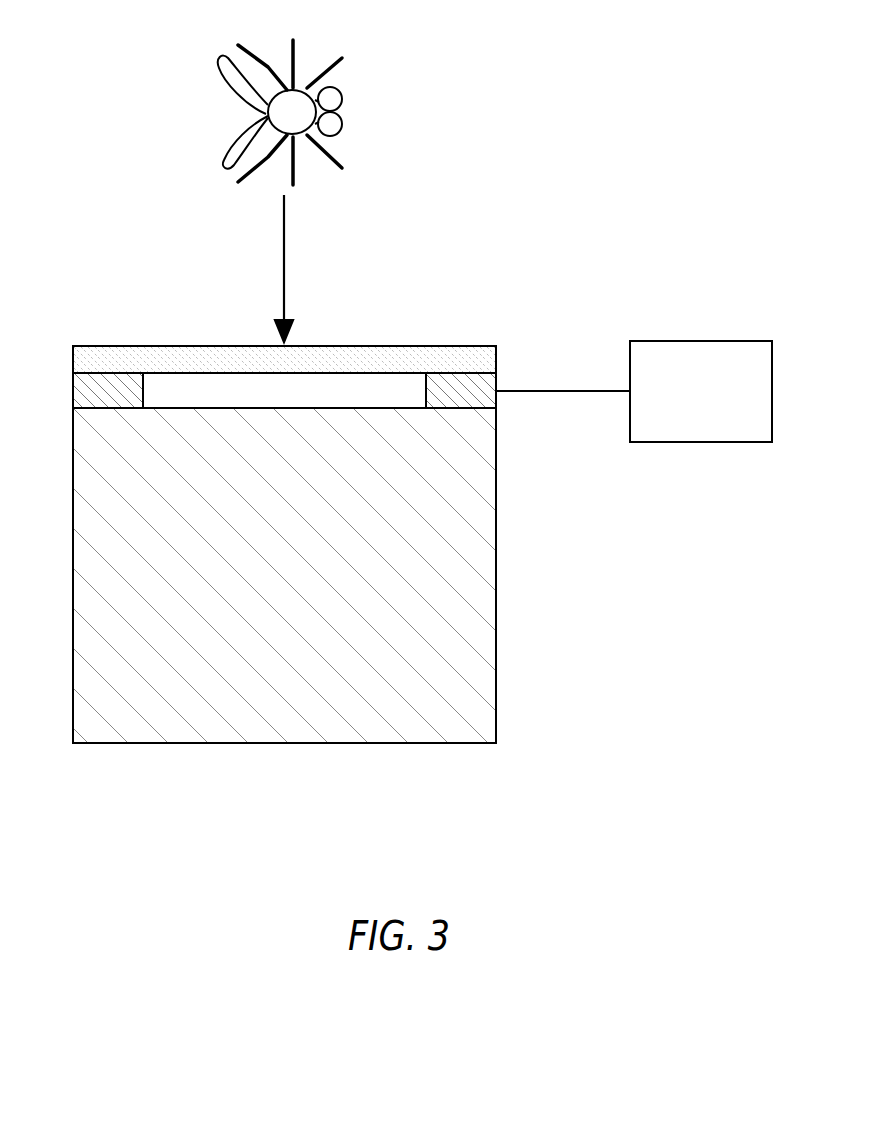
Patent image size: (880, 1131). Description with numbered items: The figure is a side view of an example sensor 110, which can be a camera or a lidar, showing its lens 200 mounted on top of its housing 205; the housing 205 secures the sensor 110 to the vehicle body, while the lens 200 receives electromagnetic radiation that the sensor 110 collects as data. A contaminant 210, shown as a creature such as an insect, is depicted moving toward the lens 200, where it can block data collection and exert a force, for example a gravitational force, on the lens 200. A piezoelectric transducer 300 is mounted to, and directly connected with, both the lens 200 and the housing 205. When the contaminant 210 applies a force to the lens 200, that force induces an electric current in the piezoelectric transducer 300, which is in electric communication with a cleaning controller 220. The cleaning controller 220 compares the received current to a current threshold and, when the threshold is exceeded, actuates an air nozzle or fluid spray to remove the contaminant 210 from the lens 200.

The sensor 110 is at (66, 60).
The lens 200 is at (395, 347).
The housing 205 is at (496, 647).
The contaminant 210 is at (345, 112).
The cleaning controller 220 is at (743, 340).
The piezoelectric transducer 300 is at (73, 383).